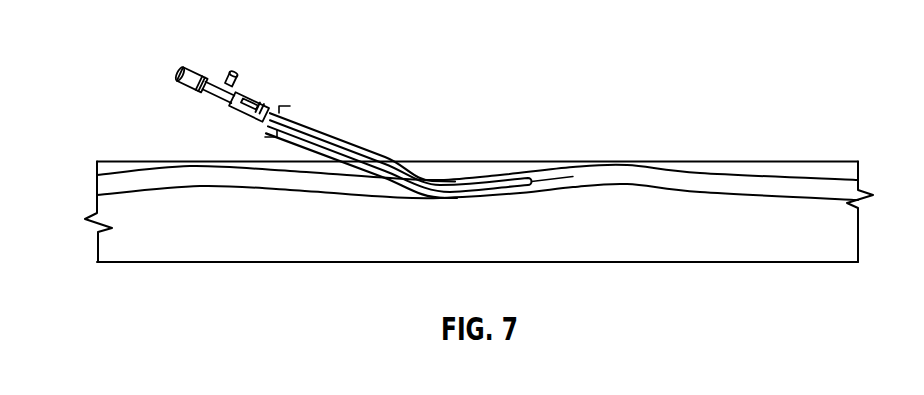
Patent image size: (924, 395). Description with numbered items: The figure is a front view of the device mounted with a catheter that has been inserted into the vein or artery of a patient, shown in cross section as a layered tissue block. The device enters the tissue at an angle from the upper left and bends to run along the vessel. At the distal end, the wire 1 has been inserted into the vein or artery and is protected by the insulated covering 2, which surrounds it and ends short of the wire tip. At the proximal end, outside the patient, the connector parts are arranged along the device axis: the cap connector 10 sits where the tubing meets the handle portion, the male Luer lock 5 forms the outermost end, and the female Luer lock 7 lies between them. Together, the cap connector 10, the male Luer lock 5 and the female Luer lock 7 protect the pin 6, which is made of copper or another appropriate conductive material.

The wire 1 is at (550, 180).
The insulated covering 2 is at (490, 182).
The male Luer lock 5 is at (195, 71).
The pin 6 is at (171, 70).
The female Luer lock 7 is at (250, 98).
The cap connector 10 is at (283, 107).